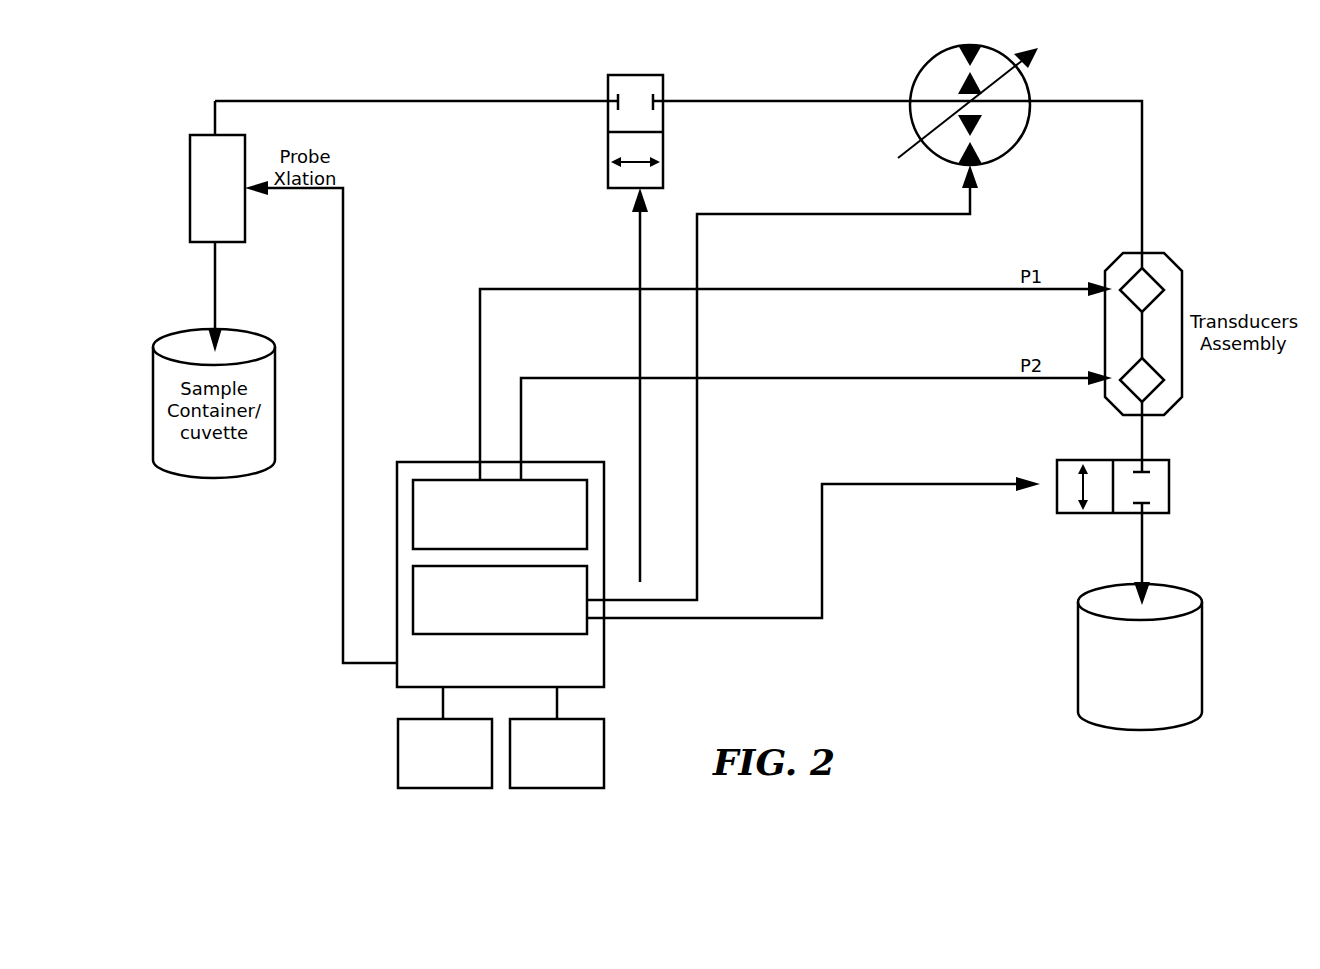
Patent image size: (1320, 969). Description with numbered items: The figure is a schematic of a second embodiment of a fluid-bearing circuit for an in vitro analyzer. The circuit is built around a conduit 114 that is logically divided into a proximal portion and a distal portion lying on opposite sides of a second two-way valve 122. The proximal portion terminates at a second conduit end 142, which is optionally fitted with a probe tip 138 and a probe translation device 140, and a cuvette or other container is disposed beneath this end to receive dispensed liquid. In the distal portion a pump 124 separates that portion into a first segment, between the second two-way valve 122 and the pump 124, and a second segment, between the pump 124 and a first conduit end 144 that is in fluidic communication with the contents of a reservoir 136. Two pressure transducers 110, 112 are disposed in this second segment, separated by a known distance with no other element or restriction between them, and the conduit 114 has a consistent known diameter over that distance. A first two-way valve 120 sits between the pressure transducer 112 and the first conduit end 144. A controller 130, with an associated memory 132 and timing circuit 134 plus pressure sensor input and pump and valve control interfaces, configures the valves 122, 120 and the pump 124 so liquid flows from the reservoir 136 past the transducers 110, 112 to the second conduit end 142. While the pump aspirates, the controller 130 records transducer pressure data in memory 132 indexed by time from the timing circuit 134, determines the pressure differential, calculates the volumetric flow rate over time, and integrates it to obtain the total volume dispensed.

The pressure transducer 110 is at (1135, 290).
The pressure transducer 112 is at (1137, 382).
The conduit 114 is at (338, 100).
The first two-way valve 120 is at (1163, 478).
The second two-way valve 122 is at (633, 84).
The pump 124 is at (956, 47).
The controller 130 is at (500, 574).
The memory 132 is at (445, 737).
The timing circuit 134 is at (557, 737).
The reservoir 136 is at (1140, 657).
The probe tip 138 is at (222, 333).
The probe translation device 140 is at (217, 171).
The second conduit end 142 is at (204, 290).
The first conduit end 144 is at (1160, 560).